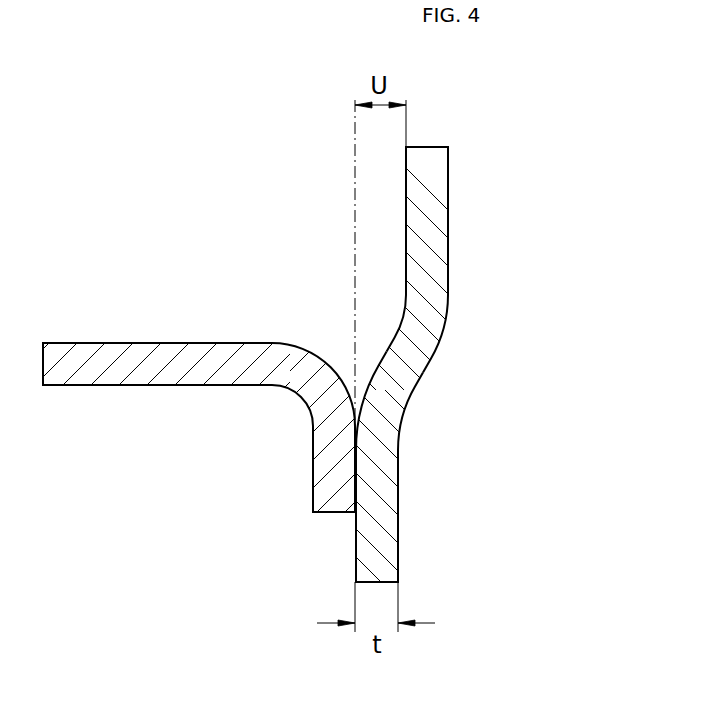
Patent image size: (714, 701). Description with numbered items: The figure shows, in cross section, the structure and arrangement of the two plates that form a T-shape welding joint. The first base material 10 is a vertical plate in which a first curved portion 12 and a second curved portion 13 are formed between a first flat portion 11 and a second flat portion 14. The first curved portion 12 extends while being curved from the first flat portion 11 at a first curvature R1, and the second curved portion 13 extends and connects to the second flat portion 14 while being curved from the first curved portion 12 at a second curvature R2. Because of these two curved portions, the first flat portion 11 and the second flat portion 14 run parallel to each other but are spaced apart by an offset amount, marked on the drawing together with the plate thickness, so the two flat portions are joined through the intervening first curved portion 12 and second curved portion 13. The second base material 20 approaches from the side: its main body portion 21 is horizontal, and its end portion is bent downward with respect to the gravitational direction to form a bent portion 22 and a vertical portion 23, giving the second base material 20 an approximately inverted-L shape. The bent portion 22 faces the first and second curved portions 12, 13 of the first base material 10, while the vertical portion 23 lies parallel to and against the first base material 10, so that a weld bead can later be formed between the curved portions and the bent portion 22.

The first base material 10 is at (355, 365).
The first flat portion 11 is at (440, 516).
The first curved portion 12 is at (407, 407).
The second curved portion 13 is at (430, 322).
The second flat portion 14 is at (440, 243).
The second base material 20 is at (200, 395).
The main body portion 21 is at (99, 373).
The bent portion 22 is at (298, 393).
The vertical portion 23 is at (277, 472).
The first curvature R1 is at (373, 383).
The second curvature R2 is at (400, 325).